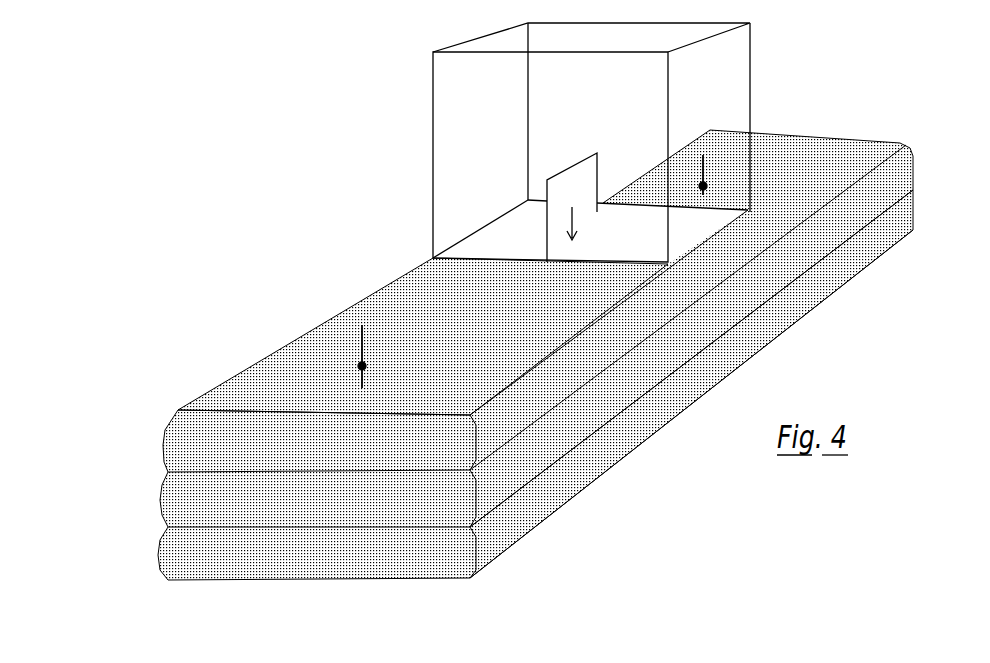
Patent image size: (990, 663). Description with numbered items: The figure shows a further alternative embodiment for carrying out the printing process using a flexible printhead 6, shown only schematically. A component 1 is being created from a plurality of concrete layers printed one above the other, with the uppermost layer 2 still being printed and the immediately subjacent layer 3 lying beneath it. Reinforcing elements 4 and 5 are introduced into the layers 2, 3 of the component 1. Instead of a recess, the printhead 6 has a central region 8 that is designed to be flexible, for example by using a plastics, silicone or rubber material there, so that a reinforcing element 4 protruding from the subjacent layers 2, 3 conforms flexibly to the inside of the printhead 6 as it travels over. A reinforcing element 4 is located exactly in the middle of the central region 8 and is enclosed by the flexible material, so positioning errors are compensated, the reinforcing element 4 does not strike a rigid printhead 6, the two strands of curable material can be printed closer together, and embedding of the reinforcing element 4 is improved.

The component 1 is at (432, 370).
The uppermost layer 2 is at (621, 351).
The subjacent layer 3 is at (672, 371).
The reinforcing element 4 is at (362, 368).
The reinforcing element 5 is at (362, 342).
The printhead 6 is at (750, 46).
The central region 8 is at (545, 208).